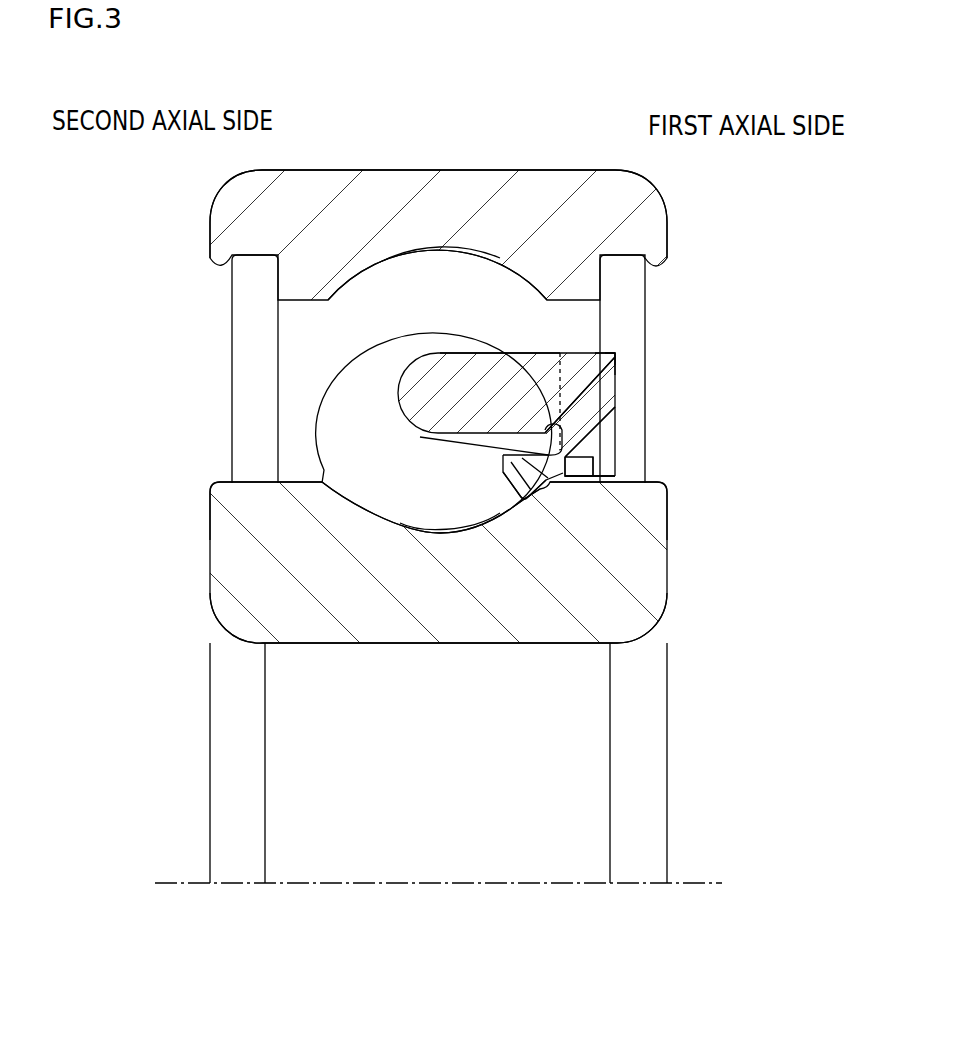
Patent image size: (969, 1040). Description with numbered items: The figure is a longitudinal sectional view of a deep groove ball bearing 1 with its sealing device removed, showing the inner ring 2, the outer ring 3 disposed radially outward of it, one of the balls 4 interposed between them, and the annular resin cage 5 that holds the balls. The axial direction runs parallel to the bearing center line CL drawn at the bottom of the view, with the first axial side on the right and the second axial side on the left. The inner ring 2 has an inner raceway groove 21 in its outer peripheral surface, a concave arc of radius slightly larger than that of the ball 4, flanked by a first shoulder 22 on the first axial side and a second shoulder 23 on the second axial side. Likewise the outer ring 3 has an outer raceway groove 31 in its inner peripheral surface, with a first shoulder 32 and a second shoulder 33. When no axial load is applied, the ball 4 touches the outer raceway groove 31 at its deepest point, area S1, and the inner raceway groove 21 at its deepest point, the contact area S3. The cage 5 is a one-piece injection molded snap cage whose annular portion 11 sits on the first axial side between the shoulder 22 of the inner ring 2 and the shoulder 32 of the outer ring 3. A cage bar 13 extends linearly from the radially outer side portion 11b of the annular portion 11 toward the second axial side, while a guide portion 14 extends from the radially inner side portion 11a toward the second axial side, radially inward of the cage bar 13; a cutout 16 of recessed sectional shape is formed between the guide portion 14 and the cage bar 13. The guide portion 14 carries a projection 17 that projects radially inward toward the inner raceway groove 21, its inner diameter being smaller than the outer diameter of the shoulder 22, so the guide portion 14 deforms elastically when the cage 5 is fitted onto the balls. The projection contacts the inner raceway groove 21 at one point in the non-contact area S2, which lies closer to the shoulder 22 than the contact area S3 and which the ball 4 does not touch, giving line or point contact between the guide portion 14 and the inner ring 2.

The ball bearing 1 is at (578, 169).
The inner ring 2 is at (668, 540).
The outer ring 3 is at (668, 232).
The ball 4 is at (333, 430).
The cage 5 is at (628, 356).
The annular portion 11 is at (617, 388).
The radially inner side portion 11a is at (597, 460).
The radially outer side portion 11b is at (618, 351).
The cage bar 13 is at (466, 376).
The guide portion 14 is at (503, 487).
The cutout 16 is at (606, 418).
The projection 17 is at (522, 503).
The inner raceway groove 21 is at (365, 520).
The first shoulder 22 is at (650, 500).
The second shoulder 23 is at (228, 500).
The outer raceway groove 31 is at (386, 262).
The first shoulder 32 is at (585, 284).
The second shoulder 33 is at (303, 285).
The area S1 is at (443, 262).
The non-contact area S2 is at (585, 469).
The contact area S3 is at (443, 518).
The bearing center line CL is at (690, 878).